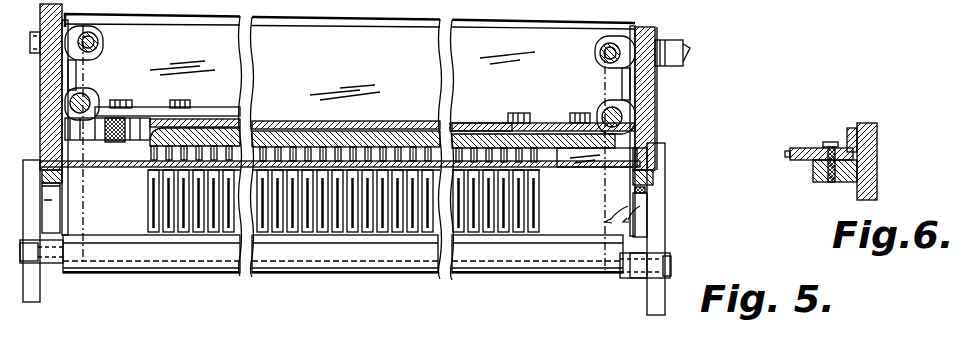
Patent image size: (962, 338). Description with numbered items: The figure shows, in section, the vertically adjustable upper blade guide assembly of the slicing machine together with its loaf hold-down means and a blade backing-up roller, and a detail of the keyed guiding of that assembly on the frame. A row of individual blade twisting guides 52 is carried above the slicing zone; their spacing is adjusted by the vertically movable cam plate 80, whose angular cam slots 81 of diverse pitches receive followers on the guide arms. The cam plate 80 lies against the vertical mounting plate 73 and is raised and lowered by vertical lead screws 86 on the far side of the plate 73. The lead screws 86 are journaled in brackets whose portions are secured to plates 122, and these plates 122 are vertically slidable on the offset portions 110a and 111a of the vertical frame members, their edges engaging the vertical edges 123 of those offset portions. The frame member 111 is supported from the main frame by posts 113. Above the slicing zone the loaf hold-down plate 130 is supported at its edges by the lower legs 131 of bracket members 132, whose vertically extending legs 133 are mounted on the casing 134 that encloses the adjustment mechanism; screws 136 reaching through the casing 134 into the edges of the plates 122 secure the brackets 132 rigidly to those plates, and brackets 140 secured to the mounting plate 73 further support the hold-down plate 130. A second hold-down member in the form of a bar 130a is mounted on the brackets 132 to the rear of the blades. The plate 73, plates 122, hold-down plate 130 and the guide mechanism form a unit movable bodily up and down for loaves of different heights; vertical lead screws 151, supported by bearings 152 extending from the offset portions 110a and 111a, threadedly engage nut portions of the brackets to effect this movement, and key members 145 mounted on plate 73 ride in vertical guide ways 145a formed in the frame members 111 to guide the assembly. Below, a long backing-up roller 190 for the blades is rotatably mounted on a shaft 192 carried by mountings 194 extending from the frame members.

In FIG. 5, the offset portion of frame member 110a is at (42, 16).
In FIG. 5, the bearing 152 is at (100, 34).
In FIG. 5, the vertical lead screw 151 is at (100, 44).
In FIG. 5, the bracket 140 is at (76, 68).
In FIG. 6, the bracket 140 is at (814, 148).
In FIG. 5, the vertical edge 123 is at (44, 74).
In FIG. 5, the plate 122 is at (44, 89).
In FIG. 5, the vertical lead screw 86 is at (70, 105).
In FIG. 5, the mounting 194 is at (34, 150).
In FIG. 5, the loaf hold-down plate 130 is at (215, 94).
In FIG. 5, the mounting plate 73 is at (419, 120).
In FIG. 6, the mounting plate 73 is at (790, 160).
In FIG. 5, the cam slot 81 is at (470, 128).
In FIG. 5, the cam plate 80 is at (562, 170).
In FIG. 5, the blade twisting guide 52 is at (141, 207).
In FIG. 5, the lower leg 131 is at (80, 220).
In FIG. 5, the backing-up roller 190 is at (347, 280).
In FIG. 5, the bar 130a is at (492, 240).
In FIG. 5, the shaft 192 is at (642, 280).
In FIG. 5, the offset portion of frame member 111a is at (650, 26).
In FIG. 5, the post 113 is at (672, 68).
In FIG. 5, the casing 134 is at (628, 168).
In FIG. 5, the vertically extending leg 133 is at (648, 178).
In FIG. 5, the screw 136 is at (648, 189).
In FIG. 5, the bracket member 132 is at (648, 212).
In FIG. 6, the vertical frame member 111 is at (870, 140).
In FIG. 6, the key member 145 is at (832, 182).
In FIG. 6, the vertical guide way 145a is at (862, 172).